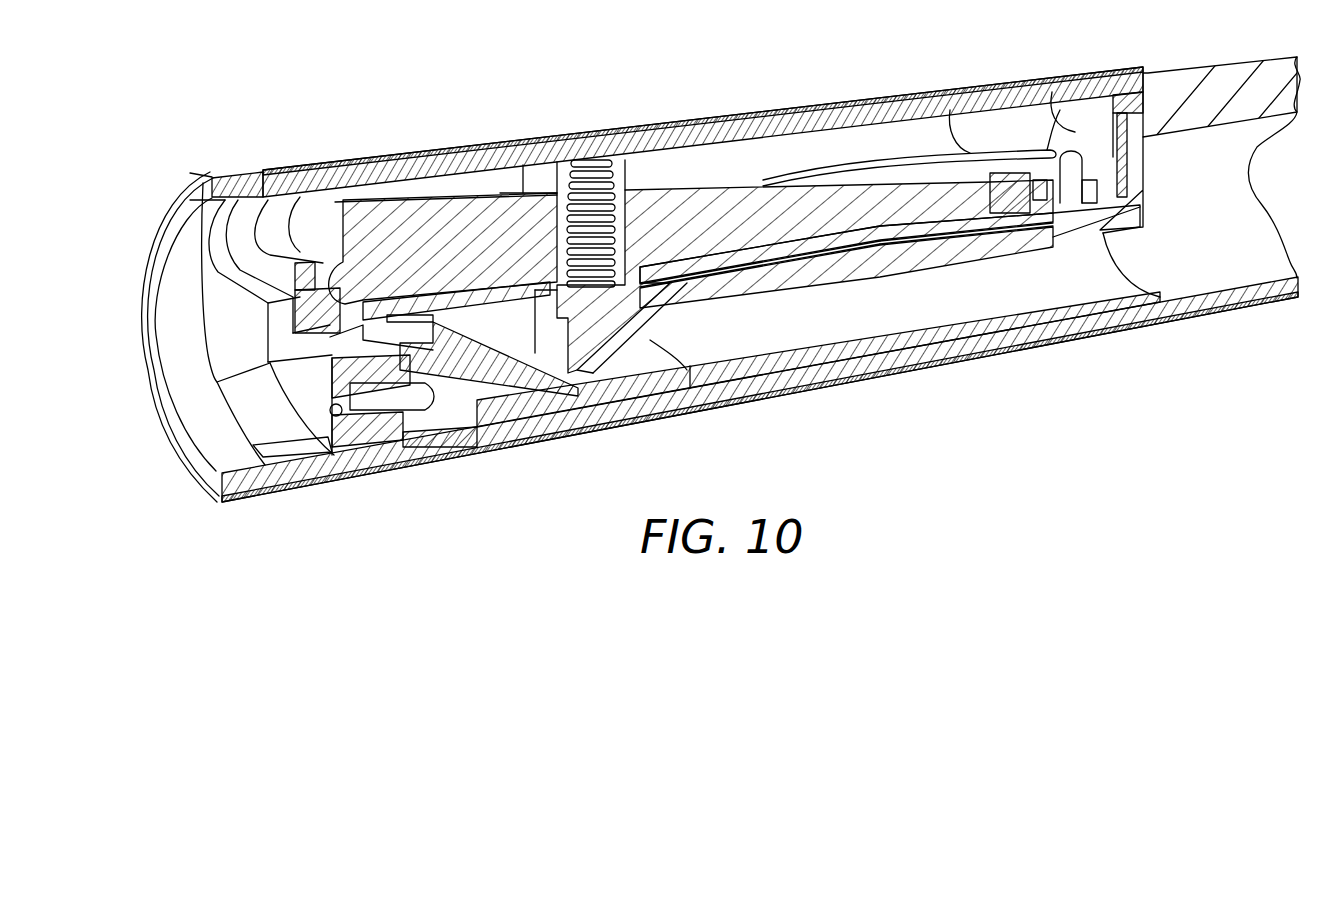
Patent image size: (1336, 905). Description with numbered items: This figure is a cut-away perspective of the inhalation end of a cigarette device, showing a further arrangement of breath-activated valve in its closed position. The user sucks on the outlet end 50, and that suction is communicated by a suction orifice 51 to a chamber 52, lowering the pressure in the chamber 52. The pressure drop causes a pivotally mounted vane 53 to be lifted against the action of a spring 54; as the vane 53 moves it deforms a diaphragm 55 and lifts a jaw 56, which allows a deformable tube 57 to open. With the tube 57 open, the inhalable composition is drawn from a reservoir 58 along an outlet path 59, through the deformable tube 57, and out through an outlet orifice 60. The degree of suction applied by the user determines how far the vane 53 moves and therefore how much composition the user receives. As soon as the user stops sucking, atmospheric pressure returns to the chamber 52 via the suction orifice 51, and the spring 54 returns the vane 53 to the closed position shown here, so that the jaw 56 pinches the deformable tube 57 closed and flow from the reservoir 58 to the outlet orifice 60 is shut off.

The outlet end 50 is at (124, 403).
The suction orifice 51 is at (222, 254).
The chamber 52 is at (740, 158).
The pivotally mounted vane 53 is at (425, 213).
The spring 54 is at (592, 172).
The diaphragm 55 is at (968, 155).
The jaw 56 is at (578, 355).
The deformable tube 57 is at (659, 393).
The reservoir 58 is at (1212, 264).
The outlet path 59 is at (857, 332).
The outlet orifice 60 is at (340, 412).